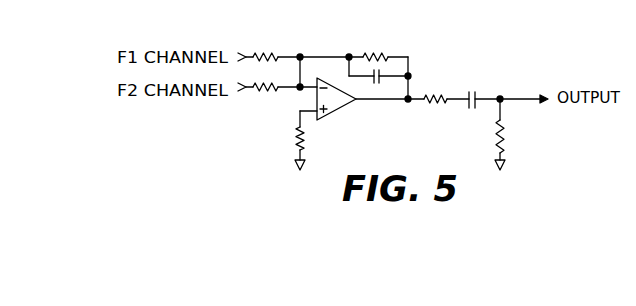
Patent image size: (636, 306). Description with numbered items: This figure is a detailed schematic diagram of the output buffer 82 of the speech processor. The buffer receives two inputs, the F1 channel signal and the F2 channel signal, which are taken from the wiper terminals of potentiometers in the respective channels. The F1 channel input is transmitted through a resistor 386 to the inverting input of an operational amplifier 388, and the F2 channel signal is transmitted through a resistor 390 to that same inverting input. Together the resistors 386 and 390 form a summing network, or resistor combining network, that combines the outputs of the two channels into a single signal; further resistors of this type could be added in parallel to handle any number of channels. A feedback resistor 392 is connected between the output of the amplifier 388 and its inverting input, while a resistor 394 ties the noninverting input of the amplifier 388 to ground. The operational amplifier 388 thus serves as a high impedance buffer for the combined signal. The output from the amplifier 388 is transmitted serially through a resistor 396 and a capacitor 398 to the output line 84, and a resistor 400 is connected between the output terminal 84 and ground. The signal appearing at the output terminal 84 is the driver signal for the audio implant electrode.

The output buffer 82 is at (531, 45).
The output terminal 84 is at (517, 98).
The resistor 386 is at (268, 53).
The operational amplifier 388 is at (343, 112).
The resistor 390 is at (270, 92).
The feedback resistor 392 is at (381, 53).
The resistor 394 is at (305, 139).
The resistor 396 is at (436, 75).
The capacitor 398 is at (474, 109).
The resistor 400 is at (505, 142).